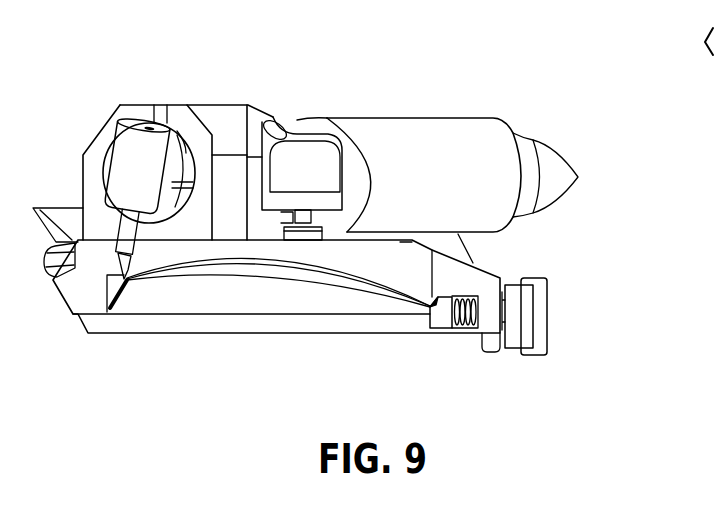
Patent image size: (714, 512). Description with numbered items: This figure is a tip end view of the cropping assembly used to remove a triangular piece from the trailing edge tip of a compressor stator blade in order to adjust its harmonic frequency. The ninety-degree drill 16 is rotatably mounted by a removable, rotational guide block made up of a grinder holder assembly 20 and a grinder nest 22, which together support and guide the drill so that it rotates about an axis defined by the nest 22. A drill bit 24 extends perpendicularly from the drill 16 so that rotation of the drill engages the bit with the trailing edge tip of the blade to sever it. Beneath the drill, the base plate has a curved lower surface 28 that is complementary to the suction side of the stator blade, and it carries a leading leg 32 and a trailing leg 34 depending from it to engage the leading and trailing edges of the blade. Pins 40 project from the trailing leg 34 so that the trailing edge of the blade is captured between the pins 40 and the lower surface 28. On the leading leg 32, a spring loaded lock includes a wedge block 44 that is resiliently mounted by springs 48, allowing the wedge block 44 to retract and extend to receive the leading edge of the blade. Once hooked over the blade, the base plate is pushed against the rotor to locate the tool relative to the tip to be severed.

The 90° drill 16 is at (448, 140).
The grinder holder assembly 20 is at (298, 120).
The grinder nest 22 is at (188, 120).
The drill bit 24 is at (128, 228).
The curved lower surface 28 is at (377, 290).
The leading leg 32 is at (528, 372).
The trailing leg 34 is at (57, 317).
The pins 40 is at (128, 295).
The wedge block 44 is at (443, 318).
The springs 48 is at (470, 332).